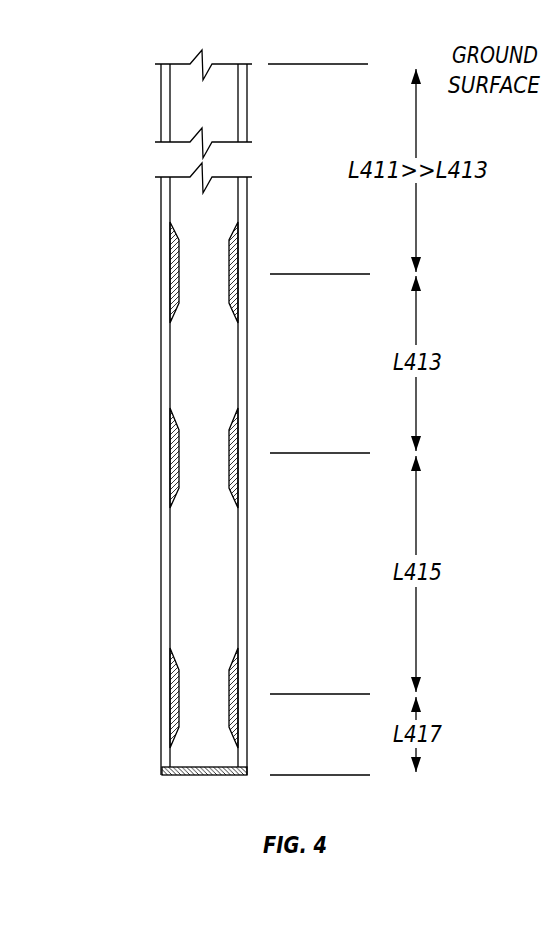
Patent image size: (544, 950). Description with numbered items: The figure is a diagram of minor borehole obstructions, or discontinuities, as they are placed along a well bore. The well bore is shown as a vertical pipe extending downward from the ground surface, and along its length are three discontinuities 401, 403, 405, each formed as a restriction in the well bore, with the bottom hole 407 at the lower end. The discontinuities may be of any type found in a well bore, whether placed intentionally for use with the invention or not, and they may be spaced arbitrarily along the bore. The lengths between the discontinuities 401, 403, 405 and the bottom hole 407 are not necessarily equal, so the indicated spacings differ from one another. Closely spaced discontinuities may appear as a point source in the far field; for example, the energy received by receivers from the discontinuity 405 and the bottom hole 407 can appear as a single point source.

The discontinuity 401 is at (172, 279).
The discontinuity 403 is at (172, 460).
The discontinuity 405 is at (173, 702).
The bottom hole 407 is at (163, 767).